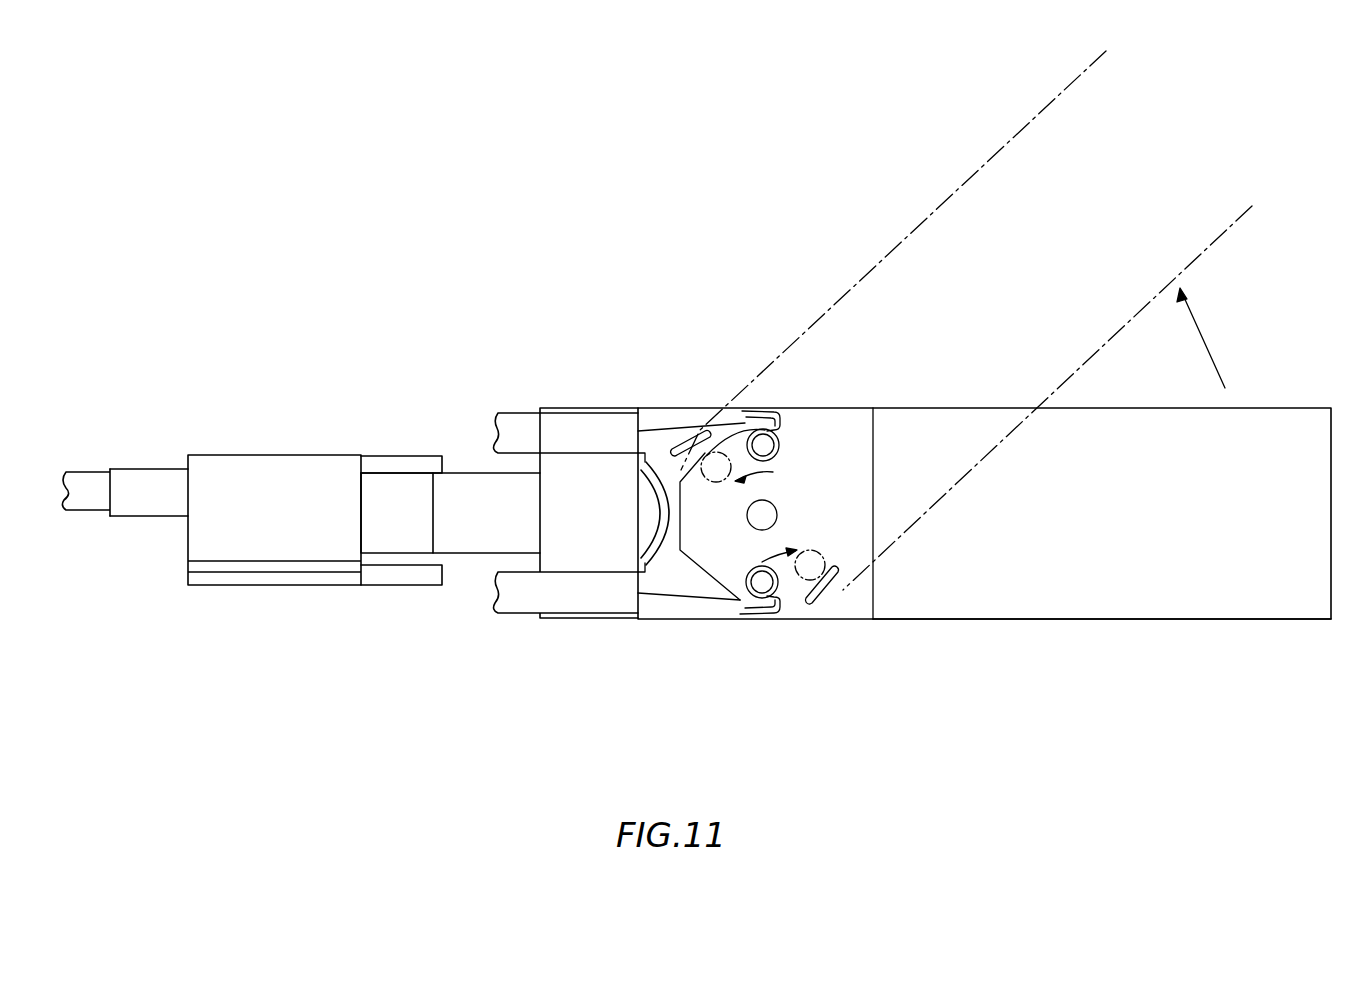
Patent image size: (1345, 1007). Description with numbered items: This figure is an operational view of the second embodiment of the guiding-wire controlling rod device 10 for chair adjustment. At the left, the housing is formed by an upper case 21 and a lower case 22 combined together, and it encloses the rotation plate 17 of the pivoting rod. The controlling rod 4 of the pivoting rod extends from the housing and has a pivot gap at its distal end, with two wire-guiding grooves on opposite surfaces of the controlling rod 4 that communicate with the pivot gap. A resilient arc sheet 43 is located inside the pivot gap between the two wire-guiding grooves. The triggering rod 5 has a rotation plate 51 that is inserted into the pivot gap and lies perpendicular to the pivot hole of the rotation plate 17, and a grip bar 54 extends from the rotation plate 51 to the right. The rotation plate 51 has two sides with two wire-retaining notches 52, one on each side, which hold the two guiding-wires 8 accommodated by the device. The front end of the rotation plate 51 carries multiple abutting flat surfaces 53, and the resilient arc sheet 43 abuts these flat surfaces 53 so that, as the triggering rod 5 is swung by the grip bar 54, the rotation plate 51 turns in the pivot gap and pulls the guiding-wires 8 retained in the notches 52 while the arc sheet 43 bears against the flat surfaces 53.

The controlling rod 4 is at (487, 490).
The triggering rod 5 is at (991, 628).
The guiding-wires 8 is at (668, 425).
The guiding-wire controlling rod device 10 is at (531, 690).
The rotation plate 17 is at (397, 540).
The upper case 21 is at (380, 457).
The lower case 22 is at (287, 582).
The resilient arc sheet 43 is at (640, 535).
The rotation plate 51 is at (805, 523).
The wire-retaining notches 52 is at (778, 448).
The abutting flat surfaces 53 is at (703, 575).
The grip bar 54 is at (1115, 620).